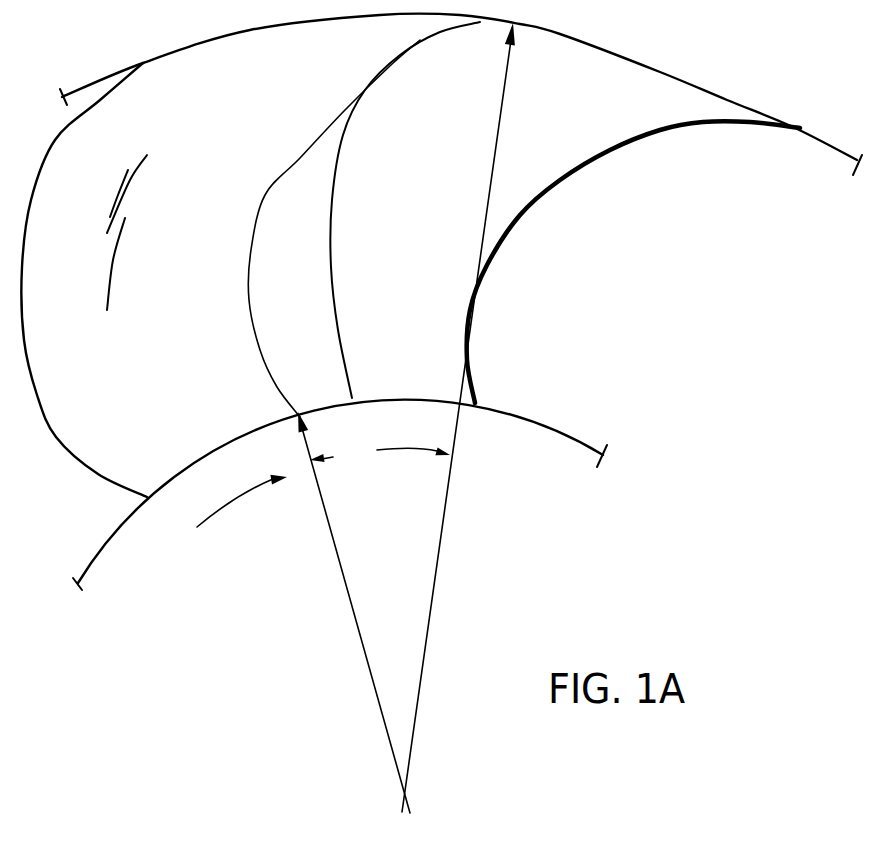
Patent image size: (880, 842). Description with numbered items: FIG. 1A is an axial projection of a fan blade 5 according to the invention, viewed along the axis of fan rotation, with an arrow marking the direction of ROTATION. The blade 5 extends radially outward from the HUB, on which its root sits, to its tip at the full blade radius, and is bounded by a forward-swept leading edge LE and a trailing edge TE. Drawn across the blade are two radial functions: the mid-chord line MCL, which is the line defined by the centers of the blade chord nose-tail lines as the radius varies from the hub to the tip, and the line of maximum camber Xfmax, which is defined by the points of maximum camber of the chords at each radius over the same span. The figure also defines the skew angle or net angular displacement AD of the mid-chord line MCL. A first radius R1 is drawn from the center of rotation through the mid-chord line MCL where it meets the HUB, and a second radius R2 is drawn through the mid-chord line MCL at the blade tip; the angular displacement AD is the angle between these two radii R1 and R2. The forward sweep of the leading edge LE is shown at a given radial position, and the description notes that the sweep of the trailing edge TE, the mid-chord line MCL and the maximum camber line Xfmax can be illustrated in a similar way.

The fan blade 5 is at (441, 255).
The trailing edge TE is at (60, 430).
The leading edge LE is at (477, 317).
The hub HUB is at (530, 418).
The mid-chord line MCL is at (291, 228).
The line of maximum camber Xfmax is at (405, 210).
The hub radius R1 is at (354, 612).
The tip radius R2 is at (482, 417).
The angular displacement of the mid-chord line AD is at (380, 464).
The direction of rotation ROTATION is at (207, 521).